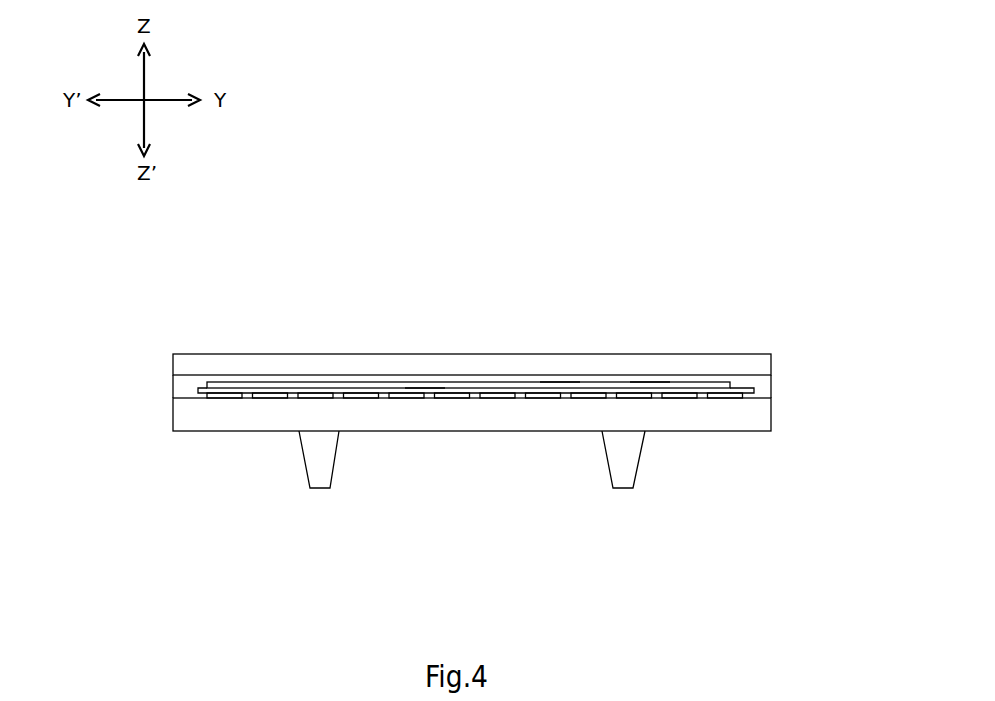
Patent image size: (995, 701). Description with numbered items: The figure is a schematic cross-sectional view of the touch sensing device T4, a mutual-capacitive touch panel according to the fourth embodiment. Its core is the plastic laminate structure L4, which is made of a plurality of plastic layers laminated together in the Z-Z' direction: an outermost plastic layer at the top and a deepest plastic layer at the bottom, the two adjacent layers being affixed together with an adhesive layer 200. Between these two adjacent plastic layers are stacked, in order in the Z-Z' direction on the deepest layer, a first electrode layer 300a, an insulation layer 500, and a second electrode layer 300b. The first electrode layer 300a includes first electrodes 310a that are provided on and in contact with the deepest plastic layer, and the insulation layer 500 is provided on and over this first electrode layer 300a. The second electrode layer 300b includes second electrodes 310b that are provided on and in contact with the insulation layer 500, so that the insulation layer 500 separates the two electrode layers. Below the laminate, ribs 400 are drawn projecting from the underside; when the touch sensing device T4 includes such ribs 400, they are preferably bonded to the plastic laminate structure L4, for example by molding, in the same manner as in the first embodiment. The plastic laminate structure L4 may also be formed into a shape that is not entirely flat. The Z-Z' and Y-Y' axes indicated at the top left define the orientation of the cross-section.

The adhesive layer 200 is at (560, 382).
The insulation layer 500 is at (650, 382).
The first electrode layer 300a is at (762, 393).
The second electrode layer 300b is at (738, 383).
The first electrodes 310a is at (425, 387).
The second electrodes 310b is at (408, 398).
The ribs 400 is at (320, 478).
The plastic laminate structure L4 is at (312, 341).
The touch sensing device T4 is at (160, 271).